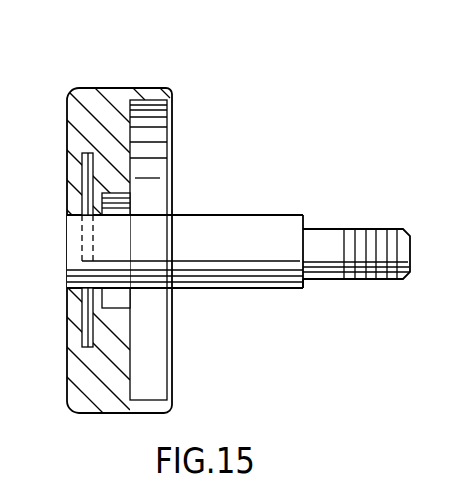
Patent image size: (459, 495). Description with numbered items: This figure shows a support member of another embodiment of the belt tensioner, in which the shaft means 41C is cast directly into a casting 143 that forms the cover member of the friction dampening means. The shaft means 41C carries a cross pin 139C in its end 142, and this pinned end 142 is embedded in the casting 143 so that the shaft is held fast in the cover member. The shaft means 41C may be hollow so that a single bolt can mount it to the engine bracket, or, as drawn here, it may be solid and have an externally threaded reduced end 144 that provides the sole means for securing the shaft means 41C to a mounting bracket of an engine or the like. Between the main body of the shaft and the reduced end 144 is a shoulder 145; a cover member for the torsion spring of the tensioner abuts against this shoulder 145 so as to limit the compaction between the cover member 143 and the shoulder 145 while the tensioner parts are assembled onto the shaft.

The casting 143 is at (108, 88).
The cross pin 139C is at (81, 167).
The end of the shaft means 142 is at (68, 257).
The shaft means 41C is at (230, 215).
The externally threaded reduced end 144 is at (325, 229).
The shoulder 145 is at (305, 290).